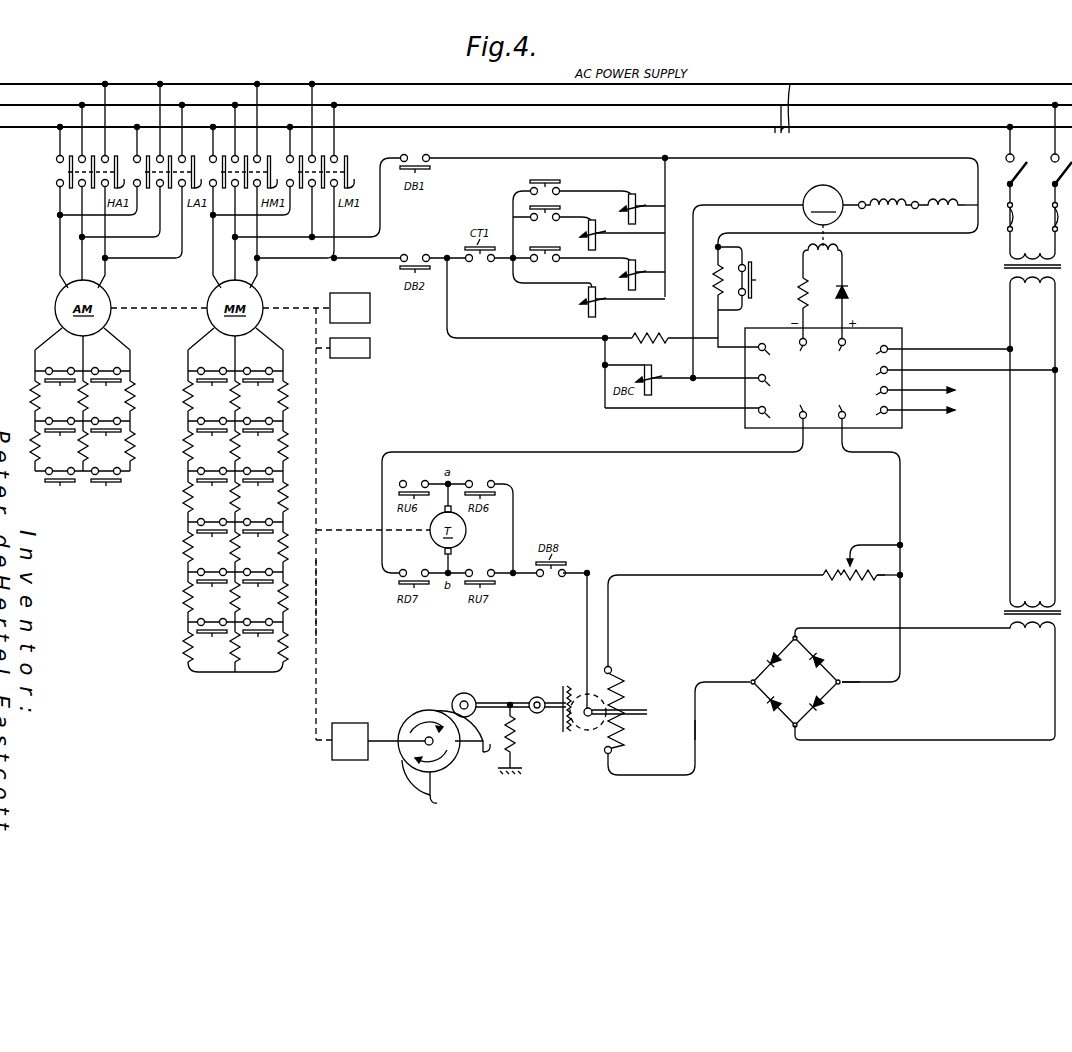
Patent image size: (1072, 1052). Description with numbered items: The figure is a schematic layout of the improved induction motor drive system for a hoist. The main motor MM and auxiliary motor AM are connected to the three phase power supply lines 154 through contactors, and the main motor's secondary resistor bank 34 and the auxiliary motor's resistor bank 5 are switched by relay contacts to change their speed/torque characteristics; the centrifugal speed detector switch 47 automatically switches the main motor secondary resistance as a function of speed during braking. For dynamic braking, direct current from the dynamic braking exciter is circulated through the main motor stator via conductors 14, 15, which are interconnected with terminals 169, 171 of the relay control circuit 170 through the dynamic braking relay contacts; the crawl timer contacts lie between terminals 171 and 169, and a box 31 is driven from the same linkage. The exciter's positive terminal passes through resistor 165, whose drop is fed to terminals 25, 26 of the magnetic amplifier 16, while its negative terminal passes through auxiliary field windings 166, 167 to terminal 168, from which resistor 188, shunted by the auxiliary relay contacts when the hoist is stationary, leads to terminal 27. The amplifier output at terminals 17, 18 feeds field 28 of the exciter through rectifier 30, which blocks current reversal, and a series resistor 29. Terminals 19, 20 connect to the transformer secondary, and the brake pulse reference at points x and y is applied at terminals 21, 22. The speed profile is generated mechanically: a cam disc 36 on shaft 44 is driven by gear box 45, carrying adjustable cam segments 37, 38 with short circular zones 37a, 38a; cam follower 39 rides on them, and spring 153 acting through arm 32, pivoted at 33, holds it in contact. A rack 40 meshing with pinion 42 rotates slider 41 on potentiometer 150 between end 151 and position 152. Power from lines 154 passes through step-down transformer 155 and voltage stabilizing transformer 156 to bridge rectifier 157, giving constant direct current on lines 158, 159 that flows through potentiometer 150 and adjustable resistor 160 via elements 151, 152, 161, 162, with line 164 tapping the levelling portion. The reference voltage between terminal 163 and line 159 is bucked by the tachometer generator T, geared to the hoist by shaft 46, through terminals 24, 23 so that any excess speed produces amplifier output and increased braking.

The auxiliary motor resistor bank 5 is at (33, 361).
The conductor 14 is at (358, 235).
The conductor 15 is at (352, 262).
The magnetic amplifier 16 is at (829, 385).
The terminal 17 is at (802, 353).
The terminal 18 is at (841, 353).
The terminal 19 is at (934, 349).
The terminal 20 is at (956, 370).
The terminal 21 is at (912, 390).
The terminal 22 is at (912, 410).
The terminal 23 is at (841, 407).
The terminal 24 is at (802, 407).
The terminal 25 is at (773, 417).
The terminal 26 is at (773, 385).
The terminal 27 is at (773, 353).
The field 28 is at (822, 256).
The resistor 29 is at (797, 300).
The rectifier 30 is at (848, 290).
The control device 31 is at (357, 356).
The arm 32 is at (500, 701).
The pivot 33 is at (537, 697).
The secondary resistor bank 34 is at (186, 522).
The cam disc 36 is at (448, 762).
The cam segment 37 is at (480, 728).
The circular zone 37a is at (491, 755).
The cam segment 38 is at (408, 779).
The circular zone 38a is at (444, 805).
The cam follower 39 is at (464, 692).
The rack 40 is at (567, 684).
The slider 41 is at (620, 718).
The pinion 42 is at (584, 725).
The shaft 44 is at (386, 740).
The gear box 45 is at (357, 749).
The shaft 46 is at (318, 603).
The centrifugal speed detector switch 47 is at (358, 316).
The potentiometer 150 is at (638, 700).
The end of potentiometer 151 is at (604, 752).
The position 152 is at (607, 672).
The spring 153 is at (514, 756).
The power supply lines 154 is at (780, 114).
The step-down transformer 155 is at (1003, 270).
The voltage stabilizing transformer 156 is at (1003, 613).
The full-wave bridge rectifier 157 is at (806, 689).
The line 158 is at (700, 732).
The line 159 is at (882, 685).
The resistor 160 is at (828, 566).
The circuit element 161 is at (685, 568).
The circuit element 162 is at (890, 566).
The terminal 163 is at (588, 572).
The line 164 is at (875, 543).
The resistor 165 is at (650, 325).
The auxiliary exciter field winding 166 is at (888, 196).
The auxiliary exciter field winding 167 is at (943, 196).
The terminal 168 is at (975, 212).
The terminal 169 is at (664, 158).
The relay control circuit 170 is at (595, 278).
The terminal 171 is at (449, 253).
The resistor 188 is at (713, 301).